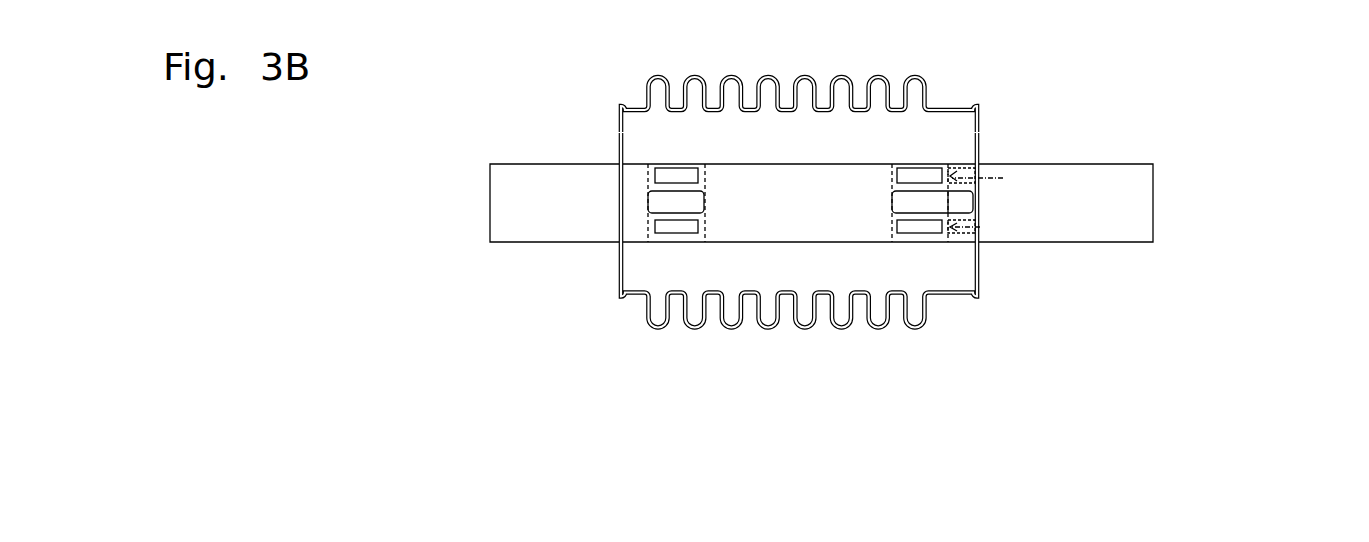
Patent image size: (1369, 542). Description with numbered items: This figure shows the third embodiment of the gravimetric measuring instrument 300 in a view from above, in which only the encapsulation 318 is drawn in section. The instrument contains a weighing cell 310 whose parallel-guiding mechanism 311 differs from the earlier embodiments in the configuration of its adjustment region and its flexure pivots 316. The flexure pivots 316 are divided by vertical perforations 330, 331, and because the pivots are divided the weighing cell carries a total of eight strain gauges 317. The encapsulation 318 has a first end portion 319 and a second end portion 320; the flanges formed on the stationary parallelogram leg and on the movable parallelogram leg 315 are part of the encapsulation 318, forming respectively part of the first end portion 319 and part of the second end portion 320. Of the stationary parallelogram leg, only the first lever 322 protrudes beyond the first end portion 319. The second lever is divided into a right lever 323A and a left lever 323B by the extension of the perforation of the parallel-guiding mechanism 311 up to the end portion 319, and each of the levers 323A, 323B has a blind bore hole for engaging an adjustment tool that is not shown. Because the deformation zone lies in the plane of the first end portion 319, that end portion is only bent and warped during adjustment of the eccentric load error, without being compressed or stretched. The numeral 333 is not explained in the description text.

The gravimetric measuring instrument 300 is at (565, 97).
The weighing cell 310 is at (820, 337).
The parallel-guiding mechanism 311 is at (773, 262).
The movable parallelogram leg 315 is at (540, 230).
The flexure pivots 316 is at (680, 168).
The strain gauges 317 is at (929, 228).
The encapsulation 318 is at (805, 75).
The first end portion 319 is at (982, 140).
The second end portion 320 is at (618, 145).
The first lever 322 is at (1106, 228).
The right lever 323A is at (948, 238).
The left lever 323B is at (950, 168).
The vertical perforation 330 is at (668, 203).
The vertical perforation 331 is at (910, 203).
The flow passages 333 is at (980, 227).